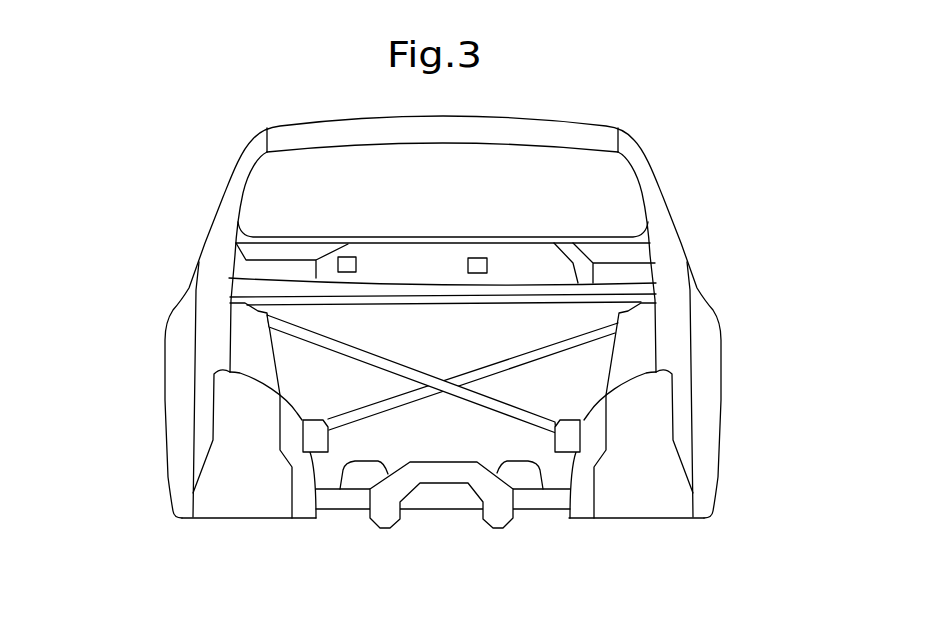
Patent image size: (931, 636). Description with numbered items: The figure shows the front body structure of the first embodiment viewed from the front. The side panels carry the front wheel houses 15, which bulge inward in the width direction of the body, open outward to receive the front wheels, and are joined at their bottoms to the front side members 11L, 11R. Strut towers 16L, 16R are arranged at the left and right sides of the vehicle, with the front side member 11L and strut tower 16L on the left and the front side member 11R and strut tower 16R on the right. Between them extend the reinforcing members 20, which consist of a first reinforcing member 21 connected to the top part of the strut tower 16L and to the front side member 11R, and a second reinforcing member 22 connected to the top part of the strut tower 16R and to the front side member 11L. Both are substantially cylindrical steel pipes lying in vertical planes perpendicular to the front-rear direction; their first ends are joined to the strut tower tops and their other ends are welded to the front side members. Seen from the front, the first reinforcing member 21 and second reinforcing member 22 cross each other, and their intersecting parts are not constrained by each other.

The front side member 11L is at (324, 434).
The front side member 11R is at (556, 442).
The front wheel house 15 is at (150, 480).
The strut tower 16L is at (250, 345).
The strut tower 16R is at (640, 348).
The reinforcing member 20 is at (442, 379).
The first reinforcing member 21 is at (375, 367).
The second reinforcing member 22 is at (518, 365).